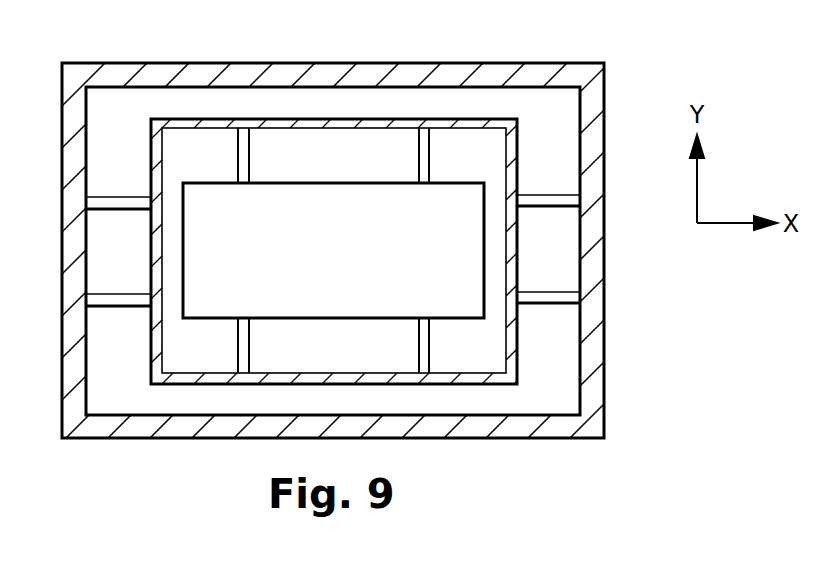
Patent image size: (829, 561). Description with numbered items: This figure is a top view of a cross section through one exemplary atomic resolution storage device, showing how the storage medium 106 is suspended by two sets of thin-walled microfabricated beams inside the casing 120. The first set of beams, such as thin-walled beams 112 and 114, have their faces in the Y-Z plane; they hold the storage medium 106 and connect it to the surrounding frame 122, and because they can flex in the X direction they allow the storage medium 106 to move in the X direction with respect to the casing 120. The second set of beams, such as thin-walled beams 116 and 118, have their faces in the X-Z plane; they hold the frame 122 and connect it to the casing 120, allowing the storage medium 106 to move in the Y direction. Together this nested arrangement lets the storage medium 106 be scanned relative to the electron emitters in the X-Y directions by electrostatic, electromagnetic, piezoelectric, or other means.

The storage medium 106 is at (353, 258).
The thin-walled beam 112 is at (243, 156).
The thin-walled beam 114 is at (426, 162).
The thin-walled beam 116 is at (545, 295).
The thin-walled beam 118 is at (545, 198).
The casing 120 is at (593, 393).
The frame 122 is at (511, 155).